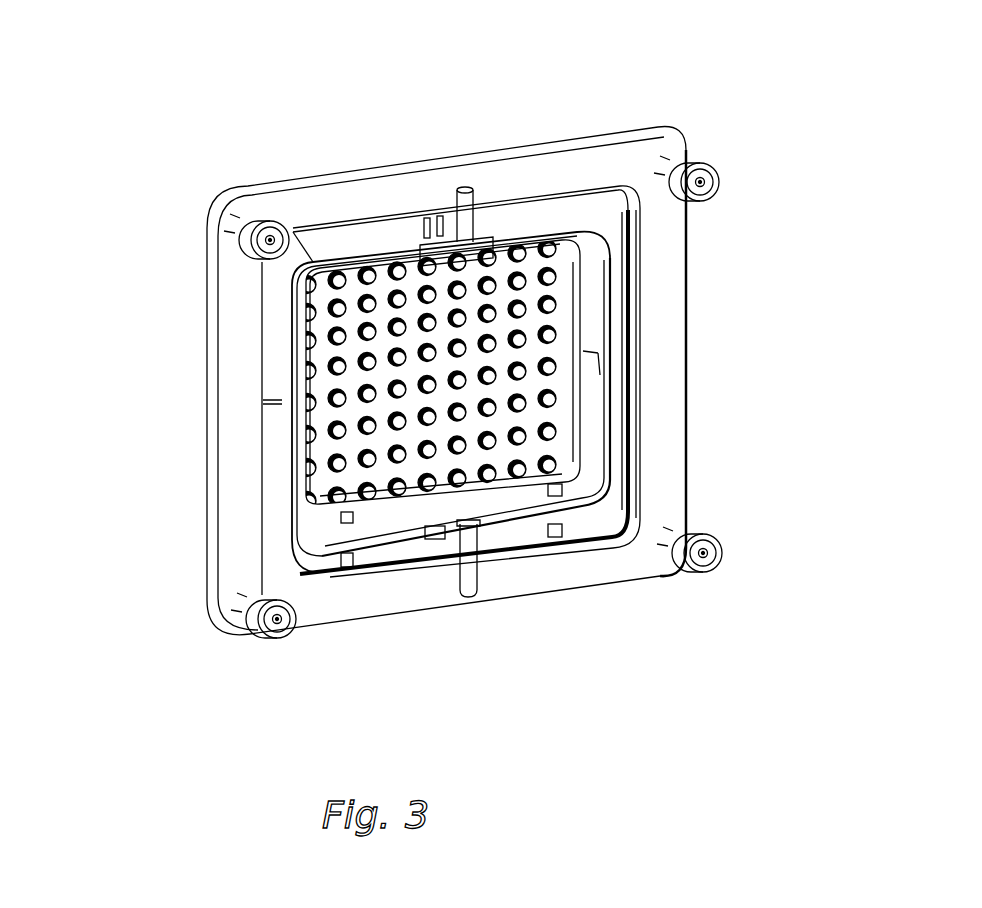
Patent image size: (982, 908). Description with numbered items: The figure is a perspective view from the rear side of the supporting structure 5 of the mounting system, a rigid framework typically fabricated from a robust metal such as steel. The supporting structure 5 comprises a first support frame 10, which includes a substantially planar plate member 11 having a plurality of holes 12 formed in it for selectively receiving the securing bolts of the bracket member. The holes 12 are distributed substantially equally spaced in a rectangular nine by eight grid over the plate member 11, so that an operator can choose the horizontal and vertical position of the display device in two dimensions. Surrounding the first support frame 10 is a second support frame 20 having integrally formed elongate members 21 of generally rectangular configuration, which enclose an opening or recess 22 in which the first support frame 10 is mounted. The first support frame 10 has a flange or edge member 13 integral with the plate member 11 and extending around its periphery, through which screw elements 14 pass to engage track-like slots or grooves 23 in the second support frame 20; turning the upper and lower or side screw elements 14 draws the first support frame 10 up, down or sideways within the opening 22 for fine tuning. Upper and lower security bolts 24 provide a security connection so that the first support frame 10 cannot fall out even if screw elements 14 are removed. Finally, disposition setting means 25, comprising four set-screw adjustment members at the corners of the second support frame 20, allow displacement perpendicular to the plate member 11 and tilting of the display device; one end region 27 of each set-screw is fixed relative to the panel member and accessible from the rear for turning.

The supporting structure 5 is at (290, 166).
The first support frame 10 is at (543, 220).
The plate member 11 is at (353, 330).
The holes 12 is at (497, 323).
The flange or edge member 13 is at (598, 353).
The screw elements 14 is at (437, 226).
The second support frame 20 is at (393, 632).
The elongate members 21 is at (397, 192).
The opening or recess 22 is at (611, 206).
The slots or grooves 23 is at (630, 418).
The security bolts 24 is at (461, 186).
The disposition setting means 25 is at (707, 158).
The end region 27 is at (706, 175).